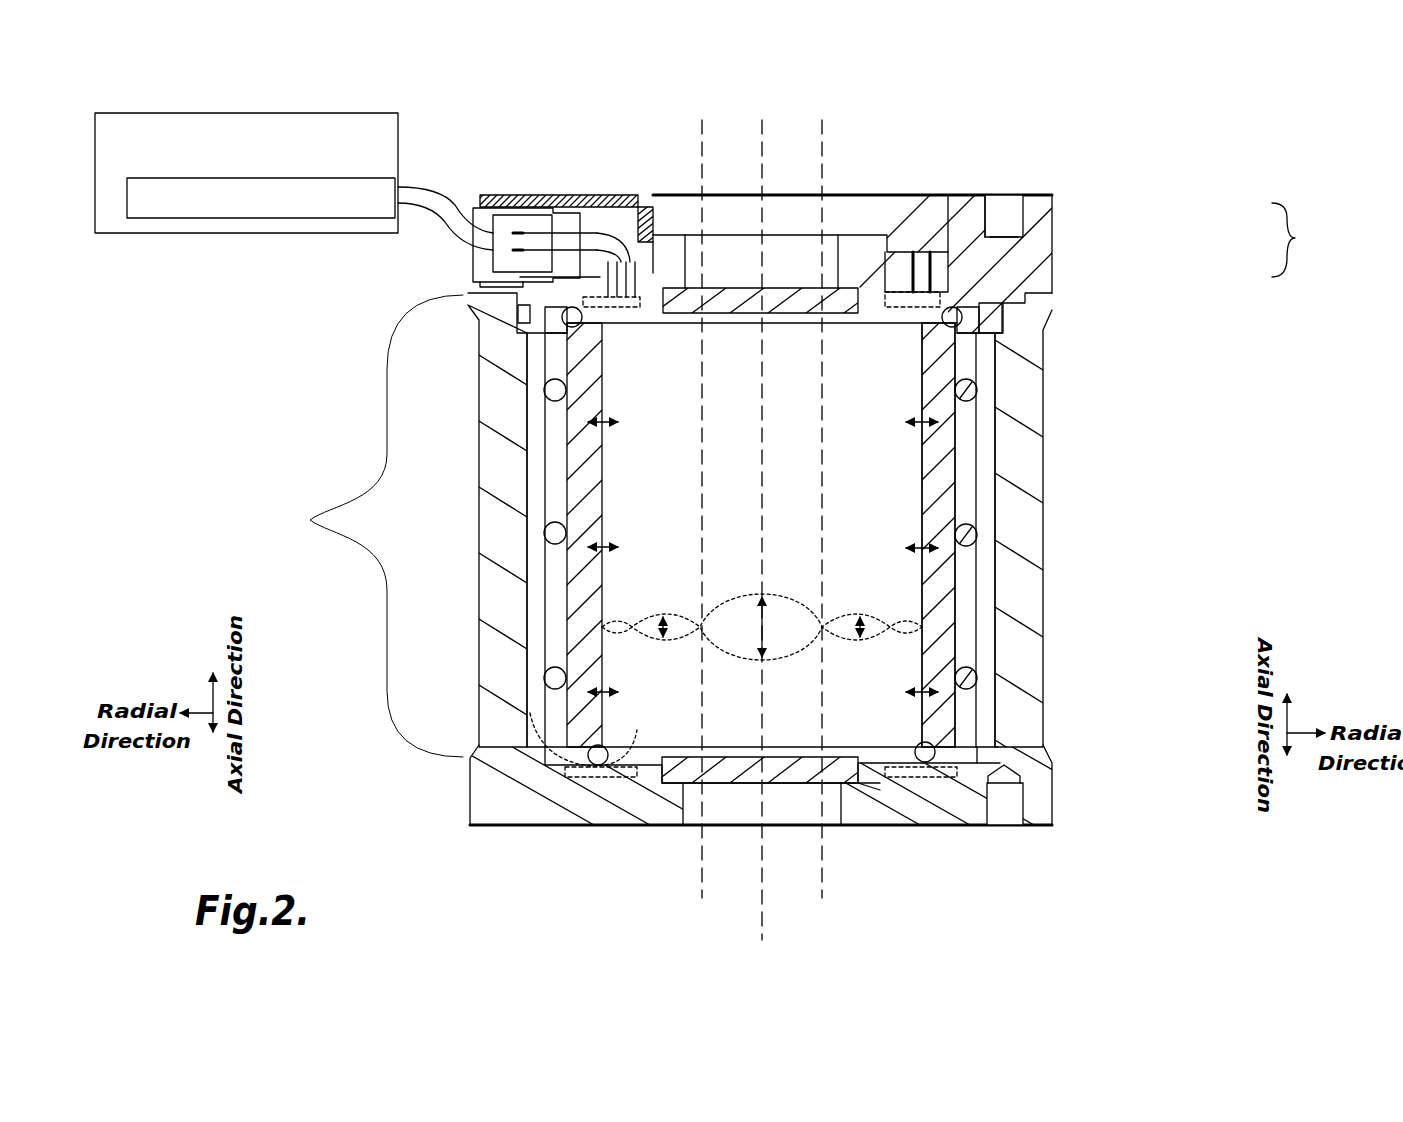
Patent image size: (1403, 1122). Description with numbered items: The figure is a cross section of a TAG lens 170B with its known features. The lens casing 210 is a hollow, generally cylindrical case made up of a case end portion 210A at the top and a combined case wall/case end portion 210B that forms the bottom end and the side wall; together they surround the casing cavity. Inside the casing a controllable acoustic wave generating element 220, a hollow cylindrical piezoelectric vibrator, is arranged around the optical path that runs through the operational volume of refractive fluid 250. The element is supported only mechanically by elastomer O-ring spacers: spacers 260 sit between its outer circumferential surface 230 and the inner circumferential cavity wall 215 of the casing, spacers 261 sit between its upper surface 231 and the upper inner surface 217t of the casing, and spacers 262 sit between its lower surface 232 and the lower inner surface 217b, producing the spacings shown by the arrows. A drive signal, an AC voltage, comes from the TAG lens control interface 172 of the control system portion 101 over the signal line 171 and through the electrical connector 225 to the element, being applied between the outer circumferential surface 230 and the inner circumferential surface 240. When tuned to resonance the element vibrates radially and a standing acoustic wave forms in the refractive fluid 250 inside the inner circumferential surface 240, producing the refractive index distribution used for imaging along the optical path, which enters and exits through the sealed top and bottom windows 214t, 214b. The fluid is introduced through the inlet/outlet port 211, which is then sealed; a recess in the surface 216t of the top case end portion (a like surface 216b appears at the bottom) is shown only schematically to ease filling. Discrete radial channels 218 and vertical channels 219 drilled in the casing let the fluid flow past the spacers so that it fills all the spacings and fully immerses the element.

The control system portion 101 is at (180, 113).
The TAG lens control interface 172 is at (163, 178).
The signal line 171 is at (420, 183).
The electrical connector 225 is at (473, 212).
The TAG lens 170B is at (1180, 117).
The lens casing 210 is at (1306, 240).
The case end portion 210A is at (1040, 262).
The combined case wall/case end portion 210B is at (1035, 305).
The inlet/outlet port 211 is at (912, 265).
The top window 214t is at (735, 285).
The bottom window 214b is at (732, 783).
The inner circumferential cavity wall 215 is at (550, 458).
The surface of the case end portion 216t is at (912, 270).
The bottom electrode leads 216b is at (864, 765).
The upper inner surface 217t is at (867, 303).
The lower inner surface 217b is at (873, 765).
The radial slots or channels 218 is at (607, 757).
The vertical slots or channels 219 is at (530, 660).
The controllable acoustic wave generating element 220 is at (943, 455).
The outer circumferential surface 230 is at (567, 570).
The upper surface 231 is at (985, 323).
The lower surface 232 is at (1005, 745).
The inner circumferential surface 240 is at (885, 775).
The refractive fluid 250 is at (940, 483).
The spacers 260 is at (975, 678).
The spacers 261 is at (572, 327).
The spacers 262 is at (604, 748).